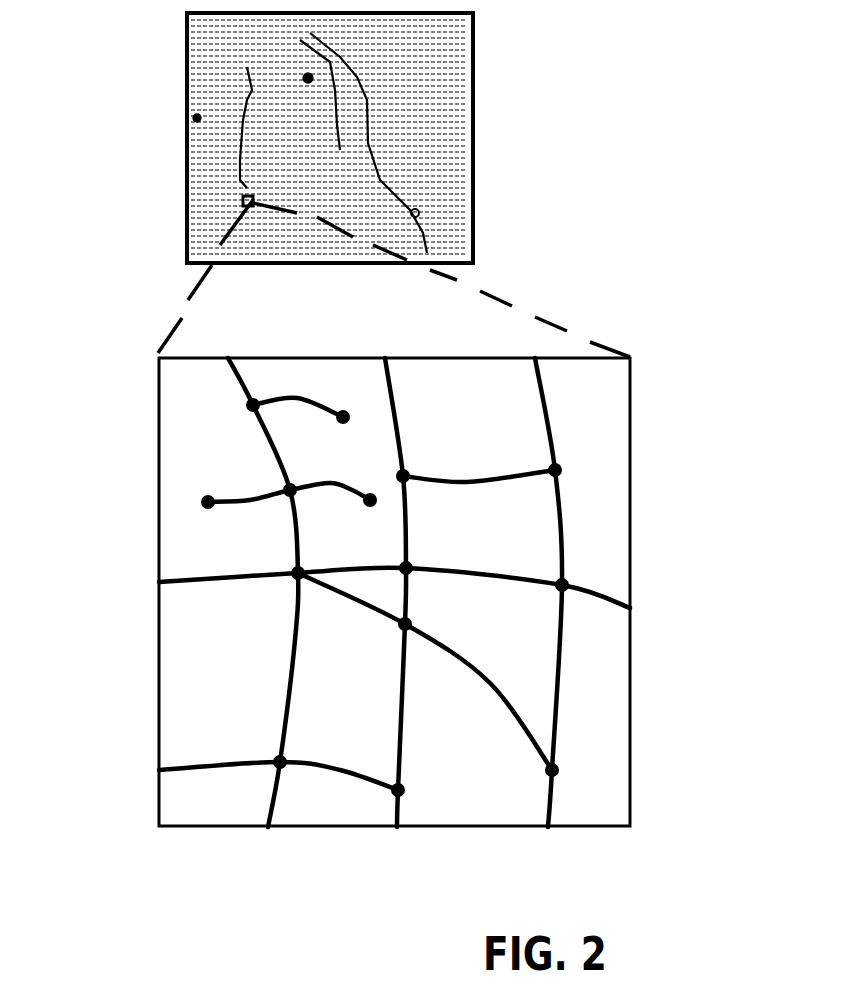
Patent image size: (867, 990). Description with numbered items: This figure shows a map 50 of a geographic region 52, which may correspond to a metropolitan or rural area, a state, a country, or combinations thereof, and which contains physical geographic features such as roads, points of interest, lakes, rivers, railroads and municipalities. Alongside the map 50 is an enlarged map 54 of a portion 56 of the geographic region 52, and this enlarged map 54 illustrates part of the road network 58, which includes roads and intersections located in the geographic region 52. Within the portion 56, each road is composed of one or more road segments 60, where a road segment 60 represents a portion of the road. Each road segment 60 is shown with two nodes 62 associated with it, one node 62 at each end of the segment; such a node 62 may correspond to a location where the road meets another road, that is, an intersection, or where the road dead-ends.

The map 50 is at (265, 138).
The geographic region 52 is at (432, 52).
The enlarged map 54 is at (642, 409).
The portion 56 is at (408, 592).
The road network 58 is at (236, 604).
The road segment 60 is at (240, 516).
The node 62 is at (203, 472).